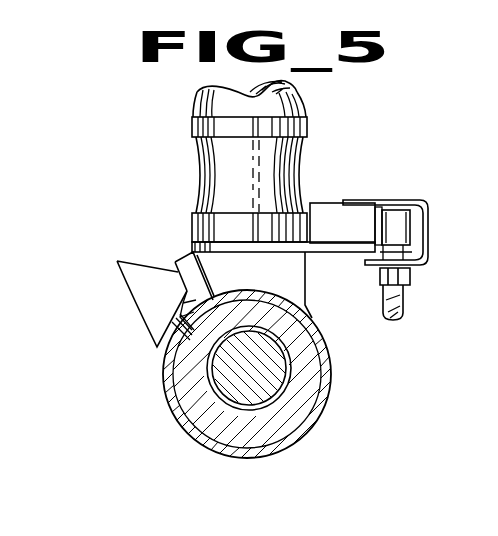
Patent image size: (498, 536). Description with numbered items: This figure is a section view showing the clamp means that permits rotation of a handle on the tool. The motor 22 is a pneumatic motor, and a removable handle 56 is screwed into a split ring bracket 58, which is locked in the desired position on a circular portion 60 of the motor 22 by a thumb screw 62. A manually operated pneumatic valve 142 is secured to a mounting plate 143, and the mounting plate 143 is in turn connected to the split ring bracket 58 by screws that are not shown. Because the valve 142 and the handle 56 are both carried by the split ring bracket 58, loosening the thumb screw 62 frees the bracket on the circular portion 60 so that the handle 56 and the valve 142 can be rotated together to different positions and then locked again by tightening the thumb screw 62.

The motor 22 is at (308, 356).
The removable handle 56 is at (192, 125).
The split ring bracket 58 is at (320, 402).
The circular portion 60 is at (268, 433).
The thumb screw 62 is at (148, 308).
The manually operated pneumatic valve 142 is at (325, 218).
The mounting plate 143 is at (192, 246).